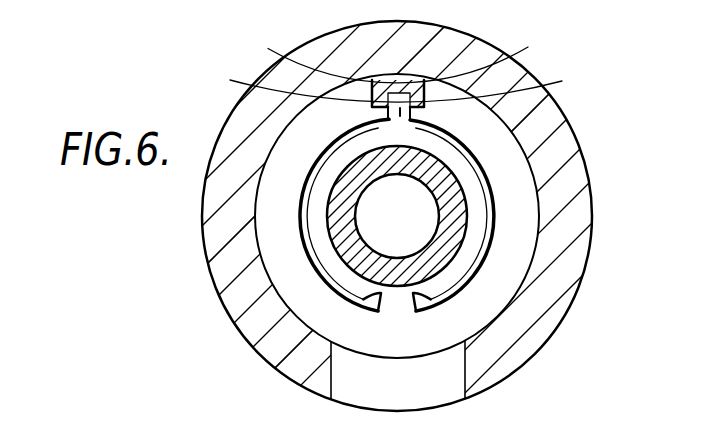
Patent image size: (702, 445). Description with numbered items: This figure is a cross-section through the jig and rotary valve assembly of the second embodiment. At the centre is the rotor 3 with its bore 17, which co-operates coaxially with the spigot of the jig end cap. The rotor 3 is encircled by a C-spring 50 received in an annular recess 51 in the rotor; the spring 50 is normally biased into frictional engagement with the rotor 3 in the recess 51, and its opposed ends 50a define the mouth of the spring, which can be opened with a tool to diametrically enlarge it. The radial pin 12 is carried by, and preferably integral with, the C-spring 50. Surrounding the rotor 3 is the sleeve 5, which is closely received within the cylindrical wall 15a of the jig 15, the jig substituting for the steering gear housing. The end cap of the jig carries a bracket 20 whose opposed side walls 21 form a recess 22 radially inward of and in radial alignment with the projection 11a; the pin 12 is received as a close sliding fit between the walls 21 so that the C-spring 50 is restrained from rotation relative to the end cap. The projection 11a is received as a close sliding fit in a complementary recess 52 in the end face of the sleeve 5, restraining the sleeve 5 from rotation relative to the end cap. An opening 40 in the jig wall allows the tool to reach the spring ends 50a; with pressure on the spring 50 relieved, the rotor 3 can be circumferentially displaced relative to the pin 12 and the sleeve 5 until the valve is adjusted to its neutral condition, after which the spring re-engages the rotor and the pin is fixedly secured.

The rotor 3 is at (452, 208).
The sleeve 5 is at (273, 267).
The projection 11a is at (396, 79).
The radial pin 12 is at (358, 126).
The jig 15 is at (277, 367).
The cylindrical wall 15a is at (240, 305).
The bore 17 is at (416, 227).
The bracket 20 is at (512, 57).
The side walls 21 is at (395, 83).
The recess 22 is at (285, 58).
The opening 40 is at (417, 401).
The C-spring 50 is at (311, 208).
The opposed ends 50a is at (414, 318).
The annular recess 51 is at (462, 286).
The recess 52 is at (418, 57).